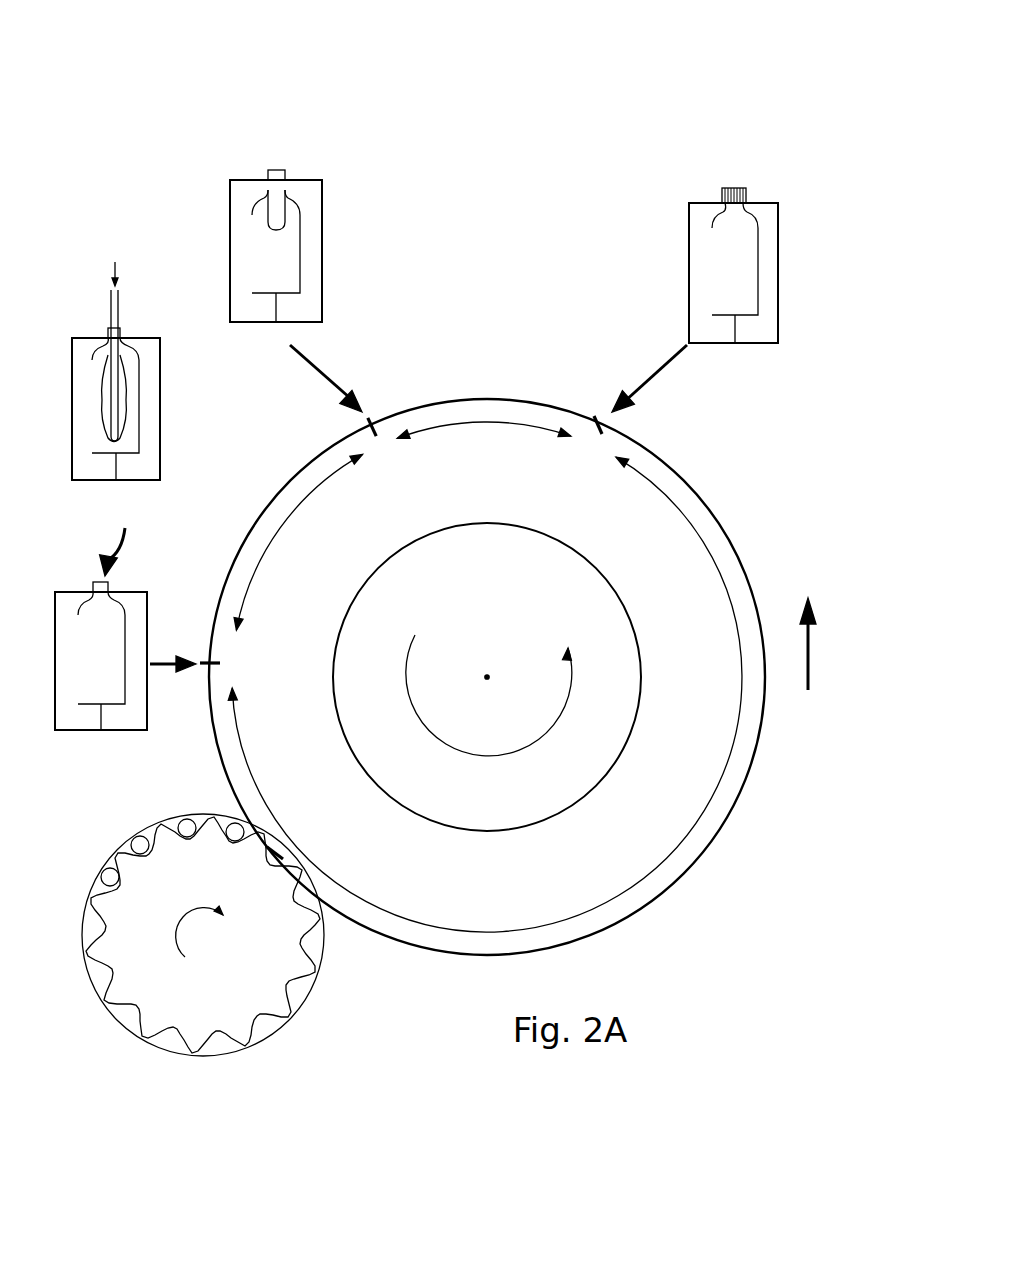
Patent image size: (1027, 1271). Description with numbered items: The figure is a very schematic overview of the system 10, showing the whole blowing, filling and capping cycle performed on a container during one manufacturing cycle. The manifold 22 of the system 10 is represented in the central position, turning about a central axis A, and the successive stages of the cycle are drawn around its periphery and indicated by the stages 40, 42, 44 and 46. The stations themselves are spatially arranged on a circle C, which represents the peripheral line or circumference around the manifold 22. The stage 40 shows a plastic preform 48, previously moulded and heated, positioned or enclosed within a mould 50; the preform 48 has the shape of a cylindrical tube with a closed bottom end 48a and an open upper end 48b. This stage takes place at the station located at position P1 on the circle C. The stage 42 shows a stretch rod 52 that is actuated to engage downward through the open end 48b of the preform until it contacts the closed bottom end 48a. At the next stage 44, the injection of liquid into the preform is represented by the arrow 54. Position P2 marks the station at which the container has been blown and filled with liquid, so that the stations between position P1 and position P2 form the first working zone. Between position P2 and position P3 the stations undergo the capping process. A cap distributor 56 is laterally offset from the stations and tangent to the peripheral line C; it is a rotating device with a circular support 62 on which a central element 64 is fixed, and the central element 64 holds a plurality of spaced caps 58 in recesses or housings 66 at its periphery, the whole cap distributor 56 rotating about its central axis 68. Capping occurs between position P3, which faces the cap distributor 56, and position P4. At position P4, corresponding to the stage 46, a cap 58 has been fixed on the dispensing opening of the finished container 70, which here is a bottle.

The system 10 is at (478, 72).
The manifold 22 is at (611, 578).
The stage 40 is at (186, 330).
The stage 42 is at (120, 403).
The stage 44 is at (32, 566).
The stage 46 is at (401, 475).
The preform 48 is at (180, 350).
The closed bottom end 48a is at (262, 230).
The open upper end 48b is at (286, 170).
The mould 50 is at (322, 250).
The stretch rod 52 is at (120, 300).
The arrow 54 is at (109, 530).
The cap distributor 56 is at (174, 974).
The cap 58 is at (745, 188).
The support 62 is at (128, 1033).
The central element 64 is at (172, 955).
The recesses or housings 66 is at (128, 855).
The central axis 68 is at (203, 932).
The container 70 is at (728, 262).
The axis A is at (487, 677).
The circle C is at (727, 518).
The position P1 is at (374, 420).
The position P2 is at (206, 662).
The position P3 is at (276, 848).
The position P4 is at (596, 418).